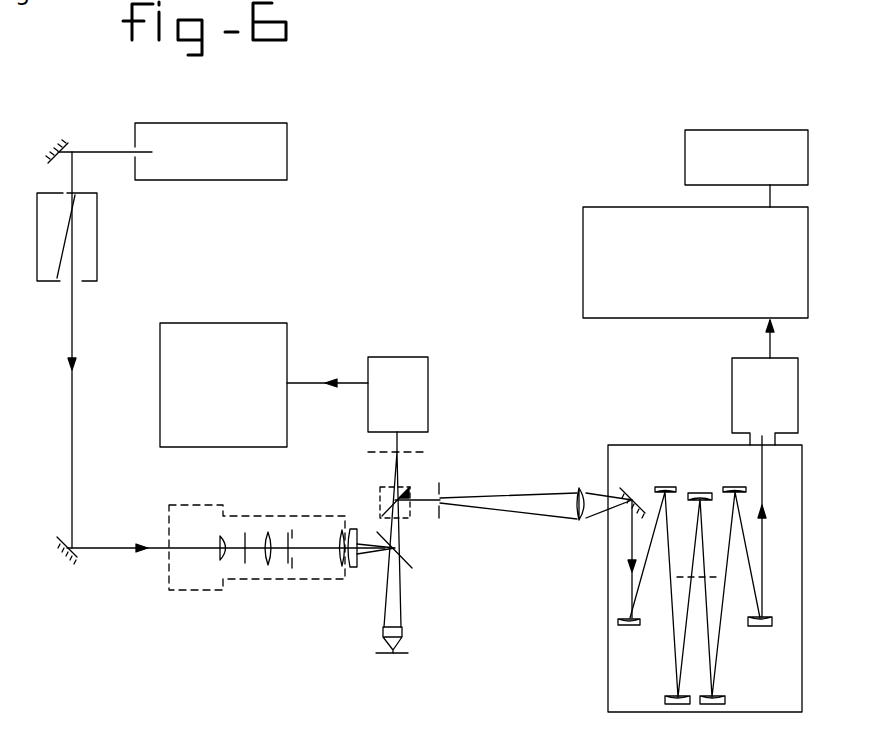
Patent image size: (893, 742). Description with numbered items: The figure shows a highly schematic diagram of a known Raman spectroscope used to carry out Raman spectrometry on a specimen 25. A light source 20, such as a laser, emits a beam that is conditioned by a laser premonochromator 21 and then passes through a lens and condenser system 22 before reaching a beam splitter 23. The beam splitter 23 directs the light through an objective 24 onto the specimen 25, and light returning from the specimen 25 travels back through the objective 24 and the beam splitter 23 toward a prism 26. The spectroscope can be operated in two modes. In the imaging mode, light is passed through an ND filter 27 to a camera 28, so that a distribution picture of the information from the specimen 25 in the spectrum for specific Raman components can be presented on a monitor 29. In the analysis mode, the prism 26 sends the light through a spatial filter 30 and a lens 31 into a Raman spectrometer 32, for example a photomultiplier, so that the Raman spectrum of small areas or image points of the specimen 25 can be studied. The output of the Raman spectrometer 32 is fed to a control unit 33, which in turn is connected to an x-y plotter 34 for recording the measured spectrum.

The light source 20 is at (240, 130).
The laser premonochromator 21 is at (88, 241).
The lens and condenser system 22 is at (210, 590).
The beam splitter 23 is at (400, 560).
The objective 24 is at (403, 630).
The specimen 25 is at (400, 656).
The prism 26 is at (381, 501).
The ND filter 27 is at (425, 452).
The camera 28 is at (425, 373).
The monitor 29 is at (287, 340).
The spatial filter 30 is at (450, 470).
The lens 31 is at (580, 490).
The Raman spectrometer 32 is at (696, 435).
The control unit 33 is at (595, 242).
The x-y plotter 34 is at (690, 147).